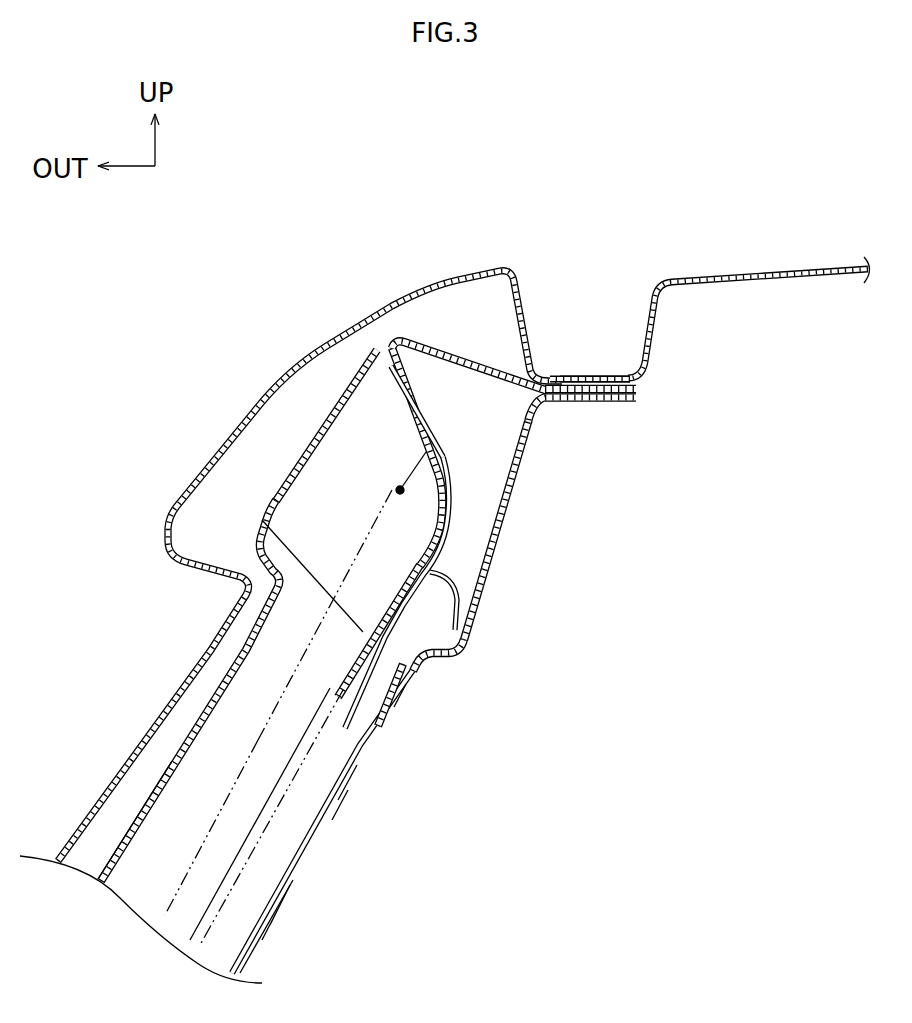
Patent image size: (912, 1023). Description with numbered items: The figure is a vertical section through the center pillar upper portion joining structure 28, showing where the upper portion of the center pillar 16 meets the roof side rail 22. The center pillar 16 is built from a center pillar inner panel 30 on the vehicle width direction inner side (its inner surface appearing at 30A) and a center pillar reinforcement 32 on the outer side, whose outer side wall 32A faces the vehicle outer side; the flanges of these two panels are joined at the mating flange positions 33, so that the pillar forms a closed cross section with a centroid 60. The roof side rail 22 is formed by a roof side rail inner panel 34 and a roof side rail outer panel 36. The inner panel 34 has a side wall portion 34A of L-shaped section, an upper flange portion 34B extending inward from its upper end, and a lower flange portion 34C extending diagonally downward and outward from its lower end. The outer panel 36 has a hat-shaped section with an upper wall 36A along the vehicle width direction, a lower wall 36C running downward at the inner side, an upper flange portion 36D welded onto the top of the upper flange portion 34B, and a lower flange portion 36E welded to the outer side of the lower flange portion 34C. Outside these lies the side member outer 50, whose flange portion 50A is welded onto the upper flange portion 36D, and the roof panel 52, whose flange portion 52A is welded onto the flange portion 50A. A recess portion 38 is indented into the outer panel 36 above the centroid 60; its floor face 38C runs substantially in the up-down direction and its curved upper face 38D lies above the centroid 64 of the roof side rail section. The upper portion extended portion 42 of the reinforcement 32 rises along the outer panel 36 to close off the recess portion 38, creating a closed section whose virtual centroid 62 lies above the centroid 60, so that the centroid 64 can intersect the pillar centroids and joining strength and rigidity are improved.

The center pillar 16 is at (318, 863).
The roof side rail 22 is at (513, 565).
The center pillar upper portion joining structure 28 is at (337, 566).
The center pillar inner panel 30 is at (322, 826).
The inner surface of pillar inner panel 30A is at (262, 928).
The center pillar reinforcement 32 is at (201, 595).
The outer side wall 32A is at (132, 811).
The mating flange positions 33 is at (265, 824).
The roof side rail inner panel 34 is at (513, 565).
The side wall portion 34A is at (492, 548).
The upper flange portion 34B is at (598, 403).
The lower flange portion 34C is at (393, 700).
The roof side rail outer panel 36 is at (472, 464).
The upper wall 36A is at (482, 366).
The lower wall 36C is at (307, 566).
The upper flange portion 36D is at (638, 390).
The lower flange portion 36E is at (344, 661).
The recess portion 38 is at (433, 547).
The floor face 38C is at (466, 623).
The upper face 38D is at (425, 426).
The upper portion extended portion 42 is at (338, 393).
The side member outer 50 is at (237, 416).
The flange portion 50A is at (582, 376).
The roof panel 52 is at (710, 282).
The flange portion 52A is at (614, 376).
The centroid 60 is at (243, 764).
The virtual centroid 62 is at (366, 537).
The centroid 64 is at (396, 490).